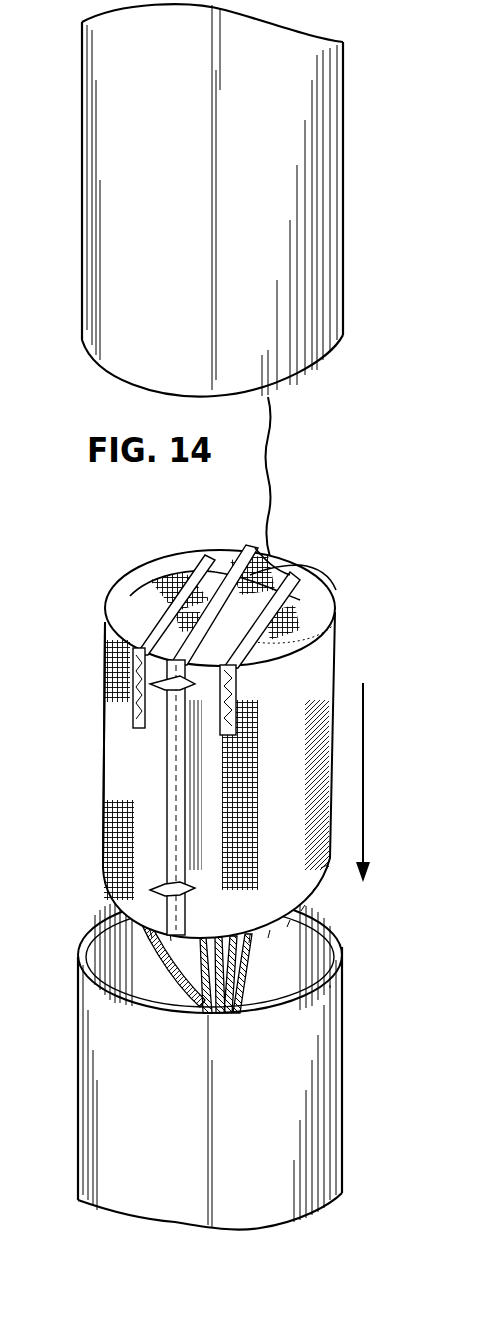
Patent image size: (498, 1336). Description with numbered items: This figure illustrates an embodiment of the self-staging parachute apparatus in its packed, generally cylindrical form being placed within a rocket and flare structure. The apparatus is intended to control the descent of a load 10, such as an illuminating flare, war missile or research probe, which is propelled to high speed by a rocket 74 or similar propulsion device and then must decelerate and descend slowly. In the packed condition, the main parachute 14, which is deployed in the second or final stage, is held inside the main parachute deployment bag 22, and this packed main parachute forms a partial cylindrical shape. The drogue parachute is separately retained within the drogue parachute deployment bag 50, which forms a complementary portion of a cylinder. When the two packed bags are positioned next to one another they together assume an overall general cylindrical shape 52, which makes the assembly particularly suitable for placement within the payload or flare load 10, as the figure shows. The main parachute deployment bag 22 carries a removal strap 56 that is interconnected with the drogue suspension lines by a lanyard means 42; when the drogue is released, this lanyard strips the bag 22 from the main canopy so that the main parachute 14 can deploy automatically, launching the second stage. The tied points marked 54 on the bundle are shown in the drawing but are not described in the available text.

The outer tubular sheath 74 is at (328, 237).
The tubular container 10 is at (83, 1057).
The folded bundle assembly 50 is at (212, 716).
The folded top portion 14 is at (158, 573).
The strap 42 is at (217, 587).
The strap 52 is at (228, 540).
The retaining strap 56 is at (127, 594).
The outer wrap 22 is at (102, 682).
The knot 54 is at (160, 688).